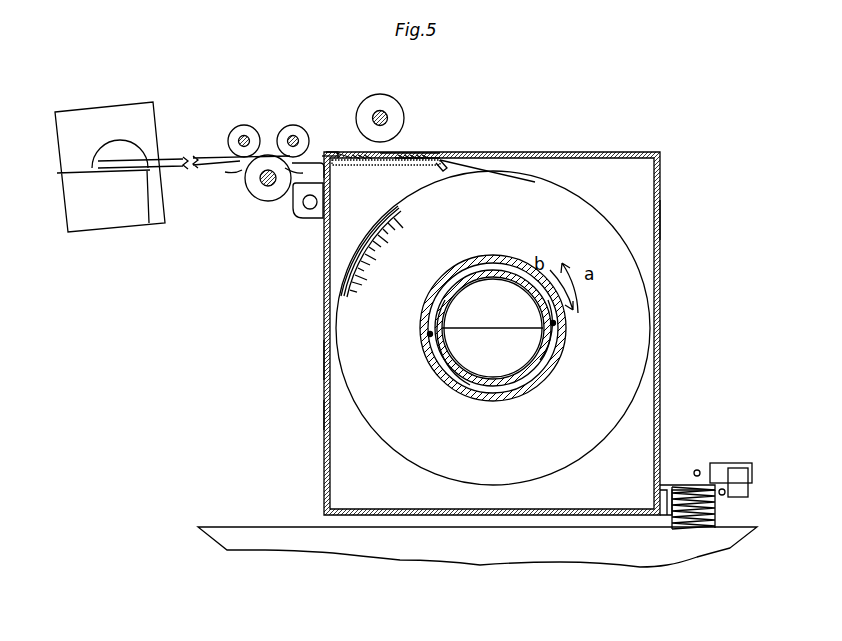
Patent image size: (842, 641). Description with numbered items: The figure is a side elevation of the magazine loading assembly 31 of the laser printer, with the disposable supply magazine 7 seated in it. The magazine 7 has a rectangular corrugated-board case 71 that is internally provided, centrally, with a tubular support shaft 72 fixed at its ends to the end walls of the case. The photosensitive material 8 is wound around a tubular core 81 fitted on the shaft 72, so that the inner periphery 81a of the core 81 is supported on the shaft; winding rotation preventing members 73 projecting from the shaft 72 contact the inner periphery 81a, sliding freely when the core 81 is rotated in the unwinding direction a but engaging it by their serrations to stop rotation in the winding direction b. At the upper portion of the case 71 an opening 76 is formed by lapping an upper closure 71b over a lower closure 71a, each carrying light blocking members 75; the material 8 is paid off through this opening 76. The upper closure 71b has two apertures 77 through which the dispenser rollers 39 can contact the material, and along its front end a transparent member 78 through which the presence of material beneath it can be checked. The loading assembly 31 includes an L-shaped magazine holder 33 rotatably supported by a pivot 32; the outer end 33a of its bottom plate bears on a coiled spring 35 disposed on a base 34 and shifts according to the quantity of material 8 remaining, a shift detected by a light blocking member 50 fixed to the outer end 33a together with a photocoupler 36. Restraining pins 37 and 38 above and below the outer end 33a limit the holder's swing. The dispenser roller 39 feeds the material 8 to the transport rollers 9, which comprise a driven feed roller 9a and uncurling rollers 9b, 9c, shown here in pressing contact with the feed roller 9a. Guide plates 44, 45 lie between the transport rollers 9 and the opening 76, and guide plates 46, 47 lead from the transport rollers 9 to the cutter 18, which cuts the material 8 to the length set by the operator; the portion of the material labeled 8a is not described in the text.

The supply magazine 7 is at (664, 279).
The case 71 is at (662, 217).
The lower closure 71a is at (365, 165).
The upper closure 71b is at (436, 146).
The support shaft 72 is at (520, 384).
The winding rotation preventing member 73 is at (428, 334).
The light blocking member 75 is at (430, 147).
The opening 76 is at (335, 150).
The aperture 77 is at (407, 150).
The transparent member 78 is at (353, 151).
The photosensitive material 8 is at (568, 215).
The tape supply box 8a is at (75, 176).
The tubular core 81 is at (554, 352).
The inner periphery of the tubular core 81a is at (546, 378).
The transport rollers 9 is at (264, 168).
The feed roller 9a is at (267, 201).
The uncurling roller 9b is at (292, 125).
The uncurling roller 9c is at (246, 125).
The cutter 18 is at (128, 140).
The loading assembly 31 is at (308, 413).
The pivot 32 is at (308, 210).
The magazine holder 33 is at (323, 355).
The outer end 33a is at (680, 482).
The base 34 is at (600, 533).
The coiled spring 35 is at (692, 532).
The photocoupler 36 is at (749, 490).
The restraining pin 37 is at (699, 470).
The restraining pin 38 is at (725, 495).
The dispenser roller 39 is at (384, 106).
The guide plate 44 is at (316, 160).
The guide plate 45 is at (306, 168).
The guide plate 46 is at (220, 157).
The guide plate 47 is at (235, 170).
The light blocking member 50 is at (742, 463).